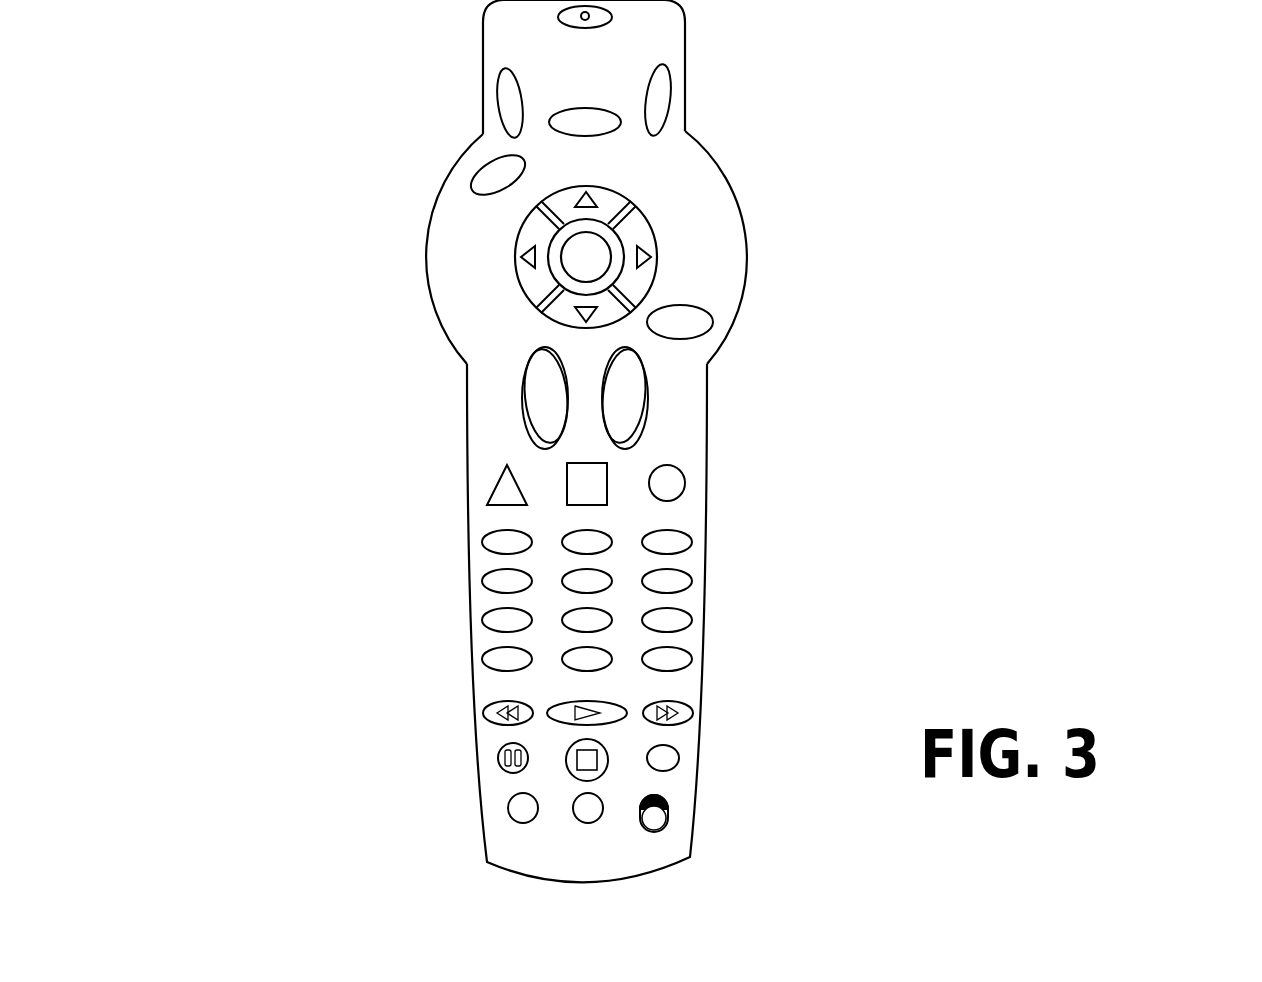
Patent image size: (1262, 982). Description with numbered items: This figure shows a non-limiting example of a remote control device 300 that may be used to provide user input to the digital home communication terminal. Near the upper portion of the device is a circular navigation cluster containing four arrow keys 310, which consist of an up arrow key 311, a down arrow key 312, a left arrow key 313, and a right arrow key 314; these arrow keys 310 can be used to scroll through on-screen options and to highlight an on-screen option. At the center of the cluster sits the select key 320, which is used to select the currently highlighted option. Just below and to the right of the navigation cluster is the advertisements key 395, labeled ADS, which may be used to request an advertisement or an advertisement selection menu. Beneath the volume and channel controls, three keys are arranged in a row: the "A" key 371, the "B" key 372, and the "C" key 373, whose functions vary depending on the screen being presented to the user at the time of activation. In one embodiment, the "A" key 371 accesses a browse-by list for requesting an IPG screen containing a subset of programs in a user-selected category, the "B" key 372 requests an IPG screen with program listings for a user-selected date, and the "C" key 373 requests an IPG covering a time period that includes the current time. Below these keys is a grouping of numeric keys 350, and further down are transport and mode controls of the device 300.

The remote control device 300 is at (1156, 118).
The arrow keys 310 is at (875, 88).
The up arrow key 311 is at (617, 202).
The down arrow key 312 is at (557, 318).
The left arrow key 313 is at (530, 300).
The right arrow key 314 is at (647, 216).
The select key 320 is at (563, 250).
The numeric keypad 350 is at (718, 527).
The "A" key 371 is at (492, 488).
The "B" key 372 is at (567, 464).
The "C" key 373 is at (686, 483).
The advertisements key 395 is at (712, 327).